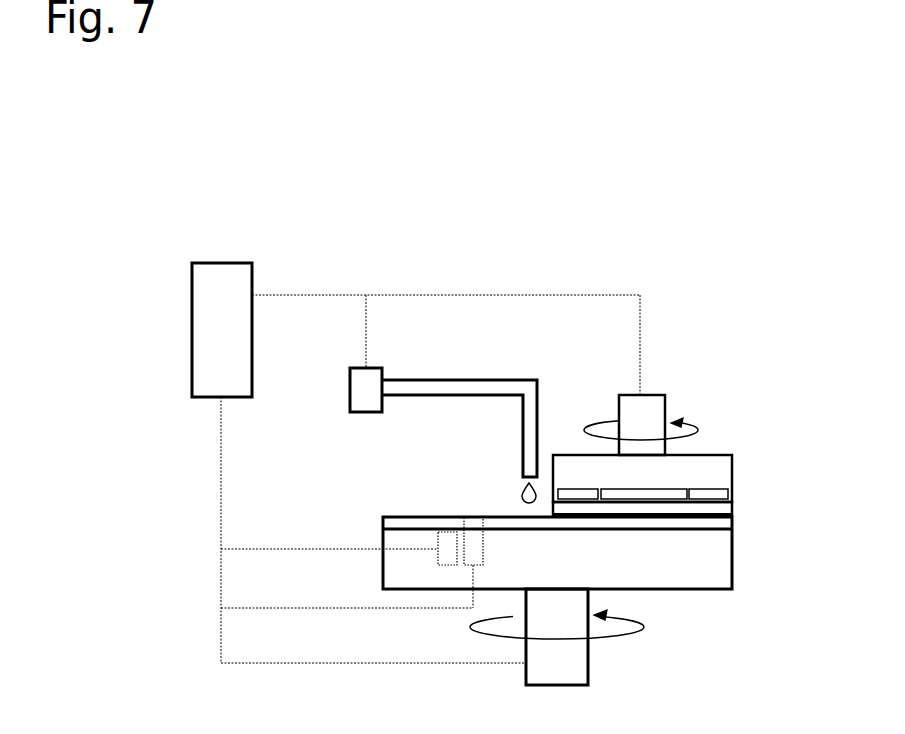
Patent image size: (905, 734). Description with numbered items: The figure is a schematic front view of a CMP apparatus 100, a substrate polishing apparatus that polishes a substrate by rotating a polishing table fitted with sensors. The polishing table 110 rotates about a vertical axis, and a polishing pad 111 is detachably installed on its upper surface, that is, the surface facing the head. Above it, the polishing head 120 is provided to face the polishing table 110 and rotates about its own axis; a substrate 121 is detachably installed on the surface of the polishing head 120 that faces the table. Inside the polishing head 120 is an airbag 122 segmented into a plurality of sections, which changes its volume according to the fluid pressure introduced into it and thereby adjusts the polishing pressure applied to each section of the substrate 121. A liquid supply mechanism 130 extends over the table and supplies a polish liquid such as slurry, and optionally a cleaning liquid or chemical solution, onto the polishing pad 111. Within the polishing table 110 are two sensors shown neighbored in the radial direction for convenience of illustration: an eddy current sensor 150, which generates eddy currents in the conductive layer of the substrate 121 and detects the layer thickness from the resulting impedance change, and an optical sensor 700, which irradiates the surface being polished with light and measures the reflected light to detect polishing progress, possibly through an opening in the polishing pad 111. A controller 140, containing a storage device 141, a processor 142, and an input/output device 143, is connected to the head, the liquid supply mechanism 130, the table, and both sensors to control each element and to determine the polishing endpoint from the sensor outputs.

The CMP apparatus 100 is at (213, 138).
The polishing table 110 is at (688, 589).
The polishing pad 111 is at (732, 520).
The polishing head 120 is at (731, 480).
The substrate 121 is at (732, 510).
The airbag 122 is at (667, 493).
The liquid supply mechanism 130 is at (490, 378).
The controller 140 is at (192, 292).
The storage device 141 is at (222, 293).
The processor 142 is at (222, 329).
The input/output device 143 is at (222, 368).
The eddy current sensor 150 is at (440, 562).
The optical sensor 700 is at (473, 567).